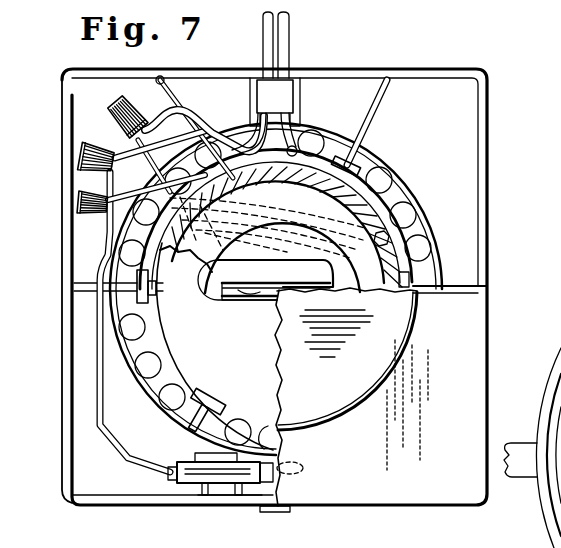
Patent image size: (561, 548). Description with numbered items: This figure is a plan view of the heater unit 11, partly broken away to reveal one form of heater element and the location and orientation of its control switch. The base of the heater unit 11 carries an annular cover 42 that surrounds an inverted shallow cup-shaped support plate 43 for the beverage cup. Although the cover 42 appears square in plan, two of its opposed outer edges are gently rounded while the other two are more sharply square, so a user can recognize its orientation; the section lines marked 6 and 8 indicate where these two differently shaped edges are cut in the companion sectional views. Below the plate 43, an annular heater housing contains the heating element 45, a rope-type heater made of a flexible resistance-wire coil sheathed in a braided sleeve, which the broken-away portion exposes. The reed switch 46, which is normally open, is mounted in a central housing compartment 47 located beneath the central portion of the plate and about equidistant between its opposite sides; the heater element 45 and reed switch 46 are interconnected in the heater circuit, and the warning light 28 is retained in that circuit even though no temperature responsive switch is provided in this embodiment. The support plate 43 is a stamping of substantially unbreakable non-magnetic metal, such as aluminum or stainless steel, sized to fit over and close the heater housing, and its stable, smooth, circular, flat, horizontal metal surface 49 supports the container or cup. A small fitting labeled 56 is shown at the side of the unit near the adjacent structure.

The heater unit 11 is at (56, 157).
The heating element 45 is at (358, 208).
The support plate 43 is at (422, 321).
The metal surface 49 is at (352, 388).
The annular cover 42 is at (470, 411).
The central housing compartment 47 is at (220, 295).
The reed switch 46 is at (257, 292).
The warning light 28 is at (303, 470).
The knob 56 is at (521, 469).
The section line 6- 6 is at (530, 292).
The section line 8 is at (300, 538).